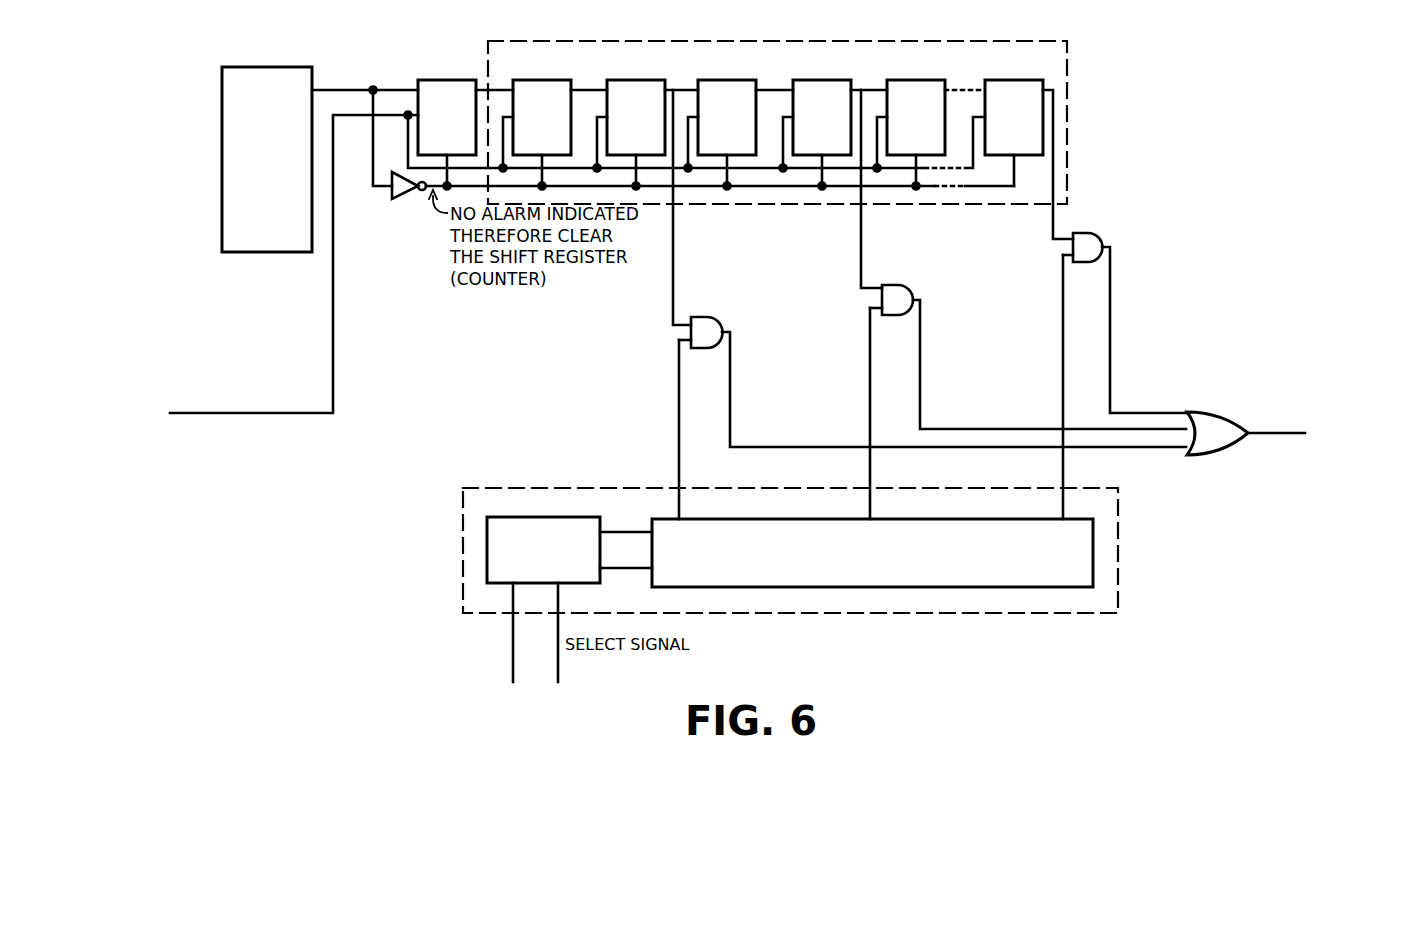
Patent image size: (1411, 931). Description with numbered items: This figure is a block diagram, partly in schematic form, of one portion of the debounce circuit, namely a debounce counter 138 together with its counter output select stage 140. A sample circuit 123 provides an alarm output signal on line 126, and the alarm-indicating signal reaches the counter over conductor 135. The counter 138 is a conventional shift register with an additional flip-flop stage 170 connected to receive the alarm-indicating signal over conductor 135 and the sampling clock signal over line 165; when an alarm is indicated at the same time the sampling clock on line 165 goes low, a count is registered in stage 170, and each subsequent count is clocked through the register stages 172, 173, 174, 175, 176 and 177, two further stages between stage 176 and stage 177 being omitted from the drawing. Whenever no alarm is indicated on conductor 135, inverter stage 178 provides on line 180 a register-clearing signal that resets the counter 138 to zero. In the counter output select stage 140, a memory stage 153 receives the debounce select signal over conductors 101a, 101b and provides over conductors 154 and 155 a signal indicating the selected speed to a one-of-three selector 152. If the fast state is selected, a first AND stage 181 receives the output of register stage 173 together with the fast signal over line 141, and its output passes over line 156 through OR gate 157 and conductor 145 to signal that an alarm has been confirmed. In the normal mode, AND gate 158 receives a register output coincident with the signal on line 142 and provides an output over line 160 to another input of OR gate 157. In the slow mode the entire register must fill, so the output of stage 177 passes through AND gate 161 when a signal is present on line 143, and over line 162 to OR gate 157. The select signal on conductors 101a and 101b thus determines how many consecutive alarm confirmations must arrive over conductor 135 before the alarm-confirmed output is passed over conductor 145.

The sample circuit 123 is at (267, 159).
The alarm output line 126 is at (323, 88).
The alarm-indicating conductor 135 is at (398, 88).
The debounce counter 138 is at (777, 109).
The counter output select stage 140 is at (790, 565).
The fast signal line 141 is at (679, 431).
The normal signal line 142 is at (870, 368).
The slow signal line 143 is at (1063, 368).
The alarm-confirmed conductor 145 is at (1252, 434).
The one-of-three selector 152 is at (746, 590).
The memory stage 153 is at (543, 536).
The memory output conductor 154 is at (626, 529).
The memory output conductor 155 is at (626, 570).
The fast output line 156 is at (800, 446).
The OR gate 157 is at (1217, 451).
The AND gate 158 is at (894, 202).
The normal output line 160 is at (982, 428).
The AND gate 161 is at (1082, 176).
The slow output line 162 is at (1110, 339).
The sampling clock line 165 is at (304, 415).
The flip-flop stage 170 is at (447, 122).
The register stage 172 is at (536, 121).
The register stage 173 is at (630, 121).
The register stage 174 is at (721, 121).
The register stage 175 is at (816, 121).
The register stage 176 is at (910, 121).
The register stage 177 is at (1014, 121).
The inverter stage 178 is at (391, 194).
The register-clearing line 180 is at (766, 198).
The first AND stage 181 is at (698, 219).
The debounce select conductor 101a is at (518, 642).
The debounce select conductor 101b is at (564, 642).